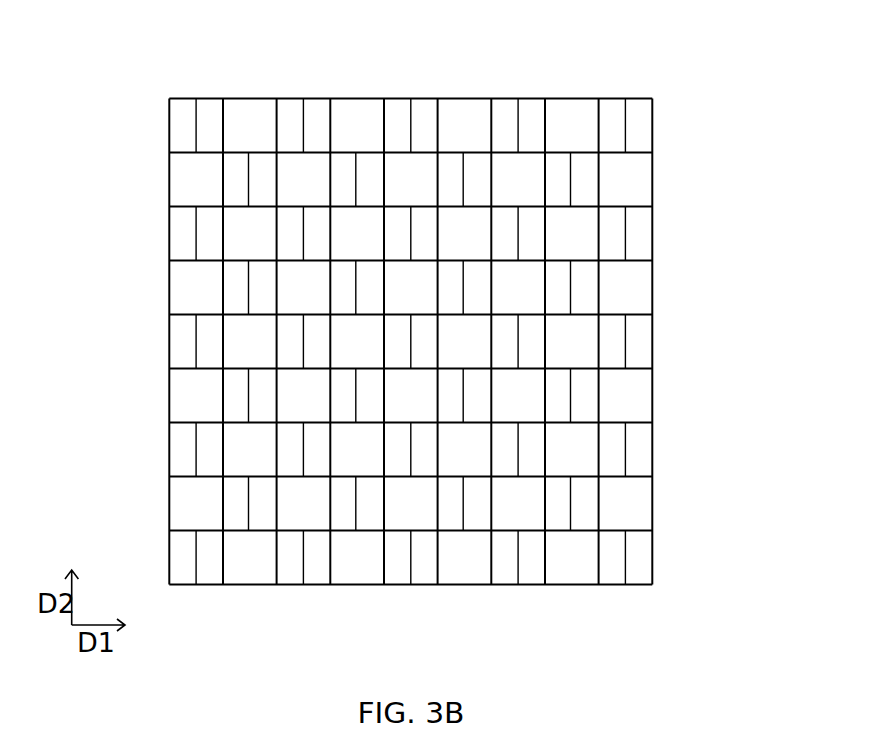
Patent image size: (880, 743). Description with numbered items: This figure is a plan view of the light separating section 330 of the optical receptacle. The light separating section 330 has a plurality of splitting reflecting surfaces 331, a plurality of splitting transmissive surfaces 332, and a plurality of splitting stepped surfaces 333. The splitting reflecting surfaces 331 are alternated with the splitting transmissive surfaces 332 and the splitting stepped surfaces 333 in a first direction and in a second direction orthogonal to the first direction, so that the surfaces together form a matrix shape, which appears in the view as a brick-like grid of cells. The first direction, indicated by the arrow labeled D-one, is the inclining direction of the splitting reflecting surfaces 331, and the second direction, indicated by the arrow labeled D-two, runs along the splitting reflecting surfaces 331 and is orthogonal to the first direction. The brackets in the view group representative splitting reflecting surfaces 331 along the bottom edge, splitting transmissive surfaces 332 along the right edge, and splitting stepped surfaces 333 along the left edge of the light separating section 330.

The light separating section 330 is at (625, 76).
The splitting reflecting surfaces 331 is at (462, 574).
The splitting transmissive surfaces 332 is at (640, 235).
The splitting stepped surfaces 333 is at (185, 240).